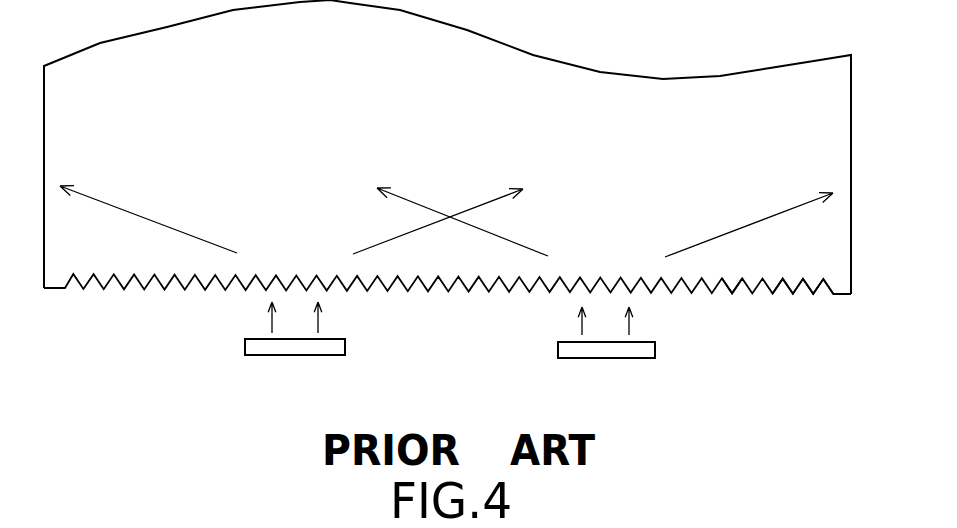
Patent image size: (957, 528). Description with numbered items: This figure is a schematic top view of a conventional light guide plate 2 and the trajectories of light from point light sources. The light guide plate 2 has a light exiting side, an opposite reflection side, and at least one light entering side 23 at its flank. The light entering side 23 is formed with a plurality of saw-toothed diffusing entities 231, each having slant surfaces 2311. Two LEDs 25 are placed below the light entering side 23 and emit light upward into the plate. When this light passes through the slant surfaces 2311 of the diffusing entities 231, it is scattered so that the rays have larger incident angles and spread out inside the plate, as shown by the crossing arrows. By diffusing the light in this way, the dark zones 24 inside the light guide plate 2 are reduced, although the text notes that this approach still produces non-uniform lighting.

The light guide plate 2 is at (730, 58).
The light entering side 23 is at (148, 302).
The saw-toothed diffusing entities 231 is at (792, 292).
The slant surfaces 2311 is at (746, 293).
The dark zones 24 is at (460, 247).
The LEDs 25 is at (603, 358).